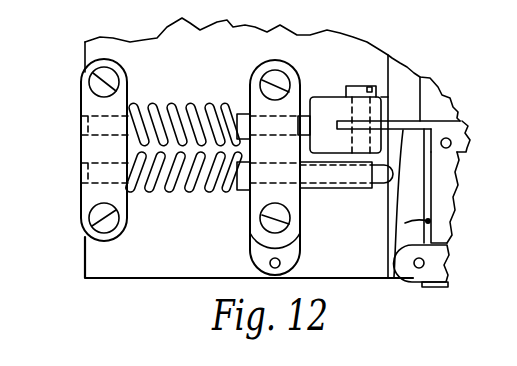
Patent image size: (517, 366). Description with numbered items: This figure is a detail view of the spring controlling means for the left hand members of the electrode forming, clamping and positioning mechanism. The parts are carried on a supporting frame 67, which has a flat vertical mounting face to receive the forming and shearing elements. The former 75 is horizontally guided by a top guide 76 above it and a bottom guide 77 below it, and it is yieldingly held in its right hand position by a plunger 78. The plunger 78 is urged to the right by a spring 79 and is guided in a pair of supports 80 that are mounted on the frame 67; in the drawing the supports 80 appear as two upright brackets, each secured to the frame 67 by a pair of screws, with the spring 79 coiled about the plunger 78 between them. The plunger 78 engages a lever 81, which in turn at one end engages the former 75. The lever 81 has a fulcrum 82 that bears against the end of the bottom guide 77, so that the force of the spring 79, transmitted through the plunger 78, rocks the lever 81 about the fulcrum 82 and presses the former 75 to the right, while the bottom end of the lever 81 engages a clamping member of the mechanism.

The supporting frame 67 is at (155, 265).
The former 75 is at (468, 139).
The top guide 76 is at (440, 103).
The bottom guide 77 is at (450, 190).
The plunger 78 is at (390, 166).
The spring 79 is at (183, 196).
The supports 80 is at (87, 203).
The lever 81 is at (428, 221).
The fulcrum 82 is at (428, 224).